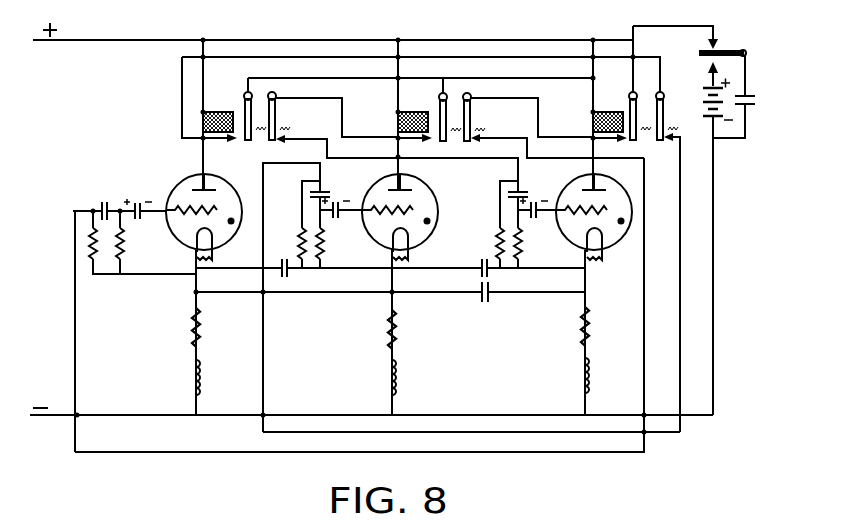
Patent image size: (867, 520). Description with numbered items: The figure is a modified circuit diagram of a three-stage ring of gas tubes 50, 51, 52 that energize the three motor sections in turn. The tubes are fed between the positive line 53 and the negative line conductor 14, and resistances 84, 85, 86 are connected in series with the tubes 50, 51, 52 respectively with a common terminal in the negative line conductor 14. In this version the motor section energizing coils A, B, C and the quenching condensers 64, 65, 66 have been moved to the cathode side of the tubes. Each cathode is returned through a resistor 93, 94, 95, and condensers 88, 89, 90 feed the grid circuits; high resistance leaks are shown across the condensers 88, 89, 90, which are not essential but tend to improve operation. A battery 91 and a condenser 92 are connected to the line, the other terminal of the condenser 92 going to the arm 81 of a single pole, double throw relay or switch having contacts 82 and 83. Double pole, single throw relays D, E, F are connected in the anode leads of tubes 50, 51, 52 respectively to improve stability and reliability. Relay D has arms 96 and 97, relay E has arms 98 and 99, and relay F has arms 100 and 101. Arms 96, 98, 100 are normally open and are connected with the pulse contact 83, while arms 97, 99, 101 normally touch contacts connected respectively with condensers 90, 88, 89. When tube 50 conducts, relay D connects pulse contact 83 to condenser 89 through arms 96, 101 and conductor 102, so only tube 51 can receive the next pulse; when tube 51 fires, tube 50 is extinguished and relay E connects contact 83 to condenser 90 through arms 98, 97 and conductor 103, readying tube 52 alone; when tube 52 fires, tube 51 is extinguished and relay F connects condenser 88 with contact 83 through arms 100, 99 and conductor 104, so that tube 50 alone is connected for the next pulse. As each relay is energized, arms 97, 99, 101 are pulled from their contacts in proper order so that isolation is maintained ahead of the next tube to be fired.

The negative line conductor 14 is at (103, 414).
The positive line 53 is at (180, 38).
The tube 50 is at (181, 181).
The tube 51 is at (424, 193).
The tube 52 is at (623, 178).
The quenching condenser 64 is at (285, 257).
The quenching condenser 65 is at (479, 258).
The quenching condenser 66 is at (486, 303).
The arm 81 is at (744, 50).
The contact 82 is at (708, 68).
The pulse contact 83 is at (716, 33).
The resistance 84 is at (193, 327).
The resistance 85 is at (387, 323).
The resistance 86 is at (581, 325).
The condenser 88 is at (102, 203).
The condenser 89 is at (328, 191).
The condenser 90 is at (530, 192).
The battery 91 is at (705, 92).
The condenser 92 is at (757, 100).
The resistor 93 is at (327, 247).
The resistor 94 is at (527, 241).
The resistor 95 is at (126, 245).
The arm 96 is at (243, 108).
The arm 97 is at (276, 114).
The arm 98 is at (447, 108).
The arm 99 is at (472, 119).
The arm 100 is at (643, 105).
The arm 101 is at (664, 111).
The conductor 102 is at (266, 361).
The conductor 103 is at (497, 161).
The conductor 104 is at (642, 302).
The motor section energizing coil A is at (193, 377).
The motor section energizing coil B is at (383, 376).
The motor section energizing coil C is at (579, 382).
The relay D is at (219, 105).
The relay E is at (414, 113).
The relay F is at (609, 112).